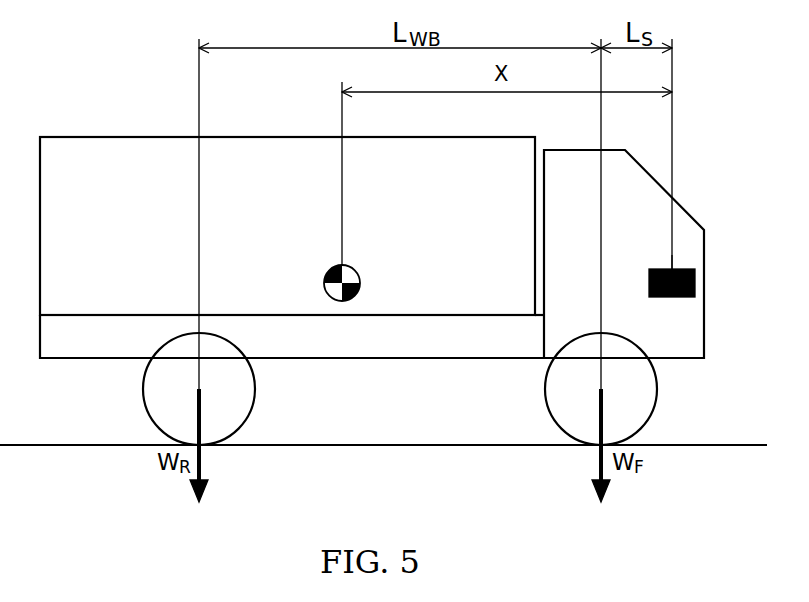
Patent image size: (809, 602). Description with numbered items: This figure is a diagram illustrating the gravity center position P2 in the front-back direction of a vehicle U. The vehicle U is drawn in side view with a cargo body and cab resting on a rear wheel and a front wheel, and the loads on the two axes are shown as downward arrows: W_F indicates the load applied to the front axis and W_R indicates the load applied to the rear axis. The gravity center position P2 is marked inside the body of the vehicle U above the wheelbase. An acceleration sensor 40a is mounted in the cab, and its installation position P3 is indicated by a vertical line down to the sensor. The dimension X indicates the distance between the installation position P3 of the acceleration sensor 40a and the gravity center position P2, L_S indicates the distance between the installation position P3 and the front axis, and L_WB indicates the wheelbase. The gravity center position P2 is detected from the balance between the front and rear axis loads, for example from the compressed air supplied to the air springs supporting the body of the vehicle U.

The vehicle U is at (110, 106).
The gravity center position P2 is at (328, 262).
The installation position of acceleration sensor P3 is at (690, 262).
The acceleration sensor 40a is at (695, 281).